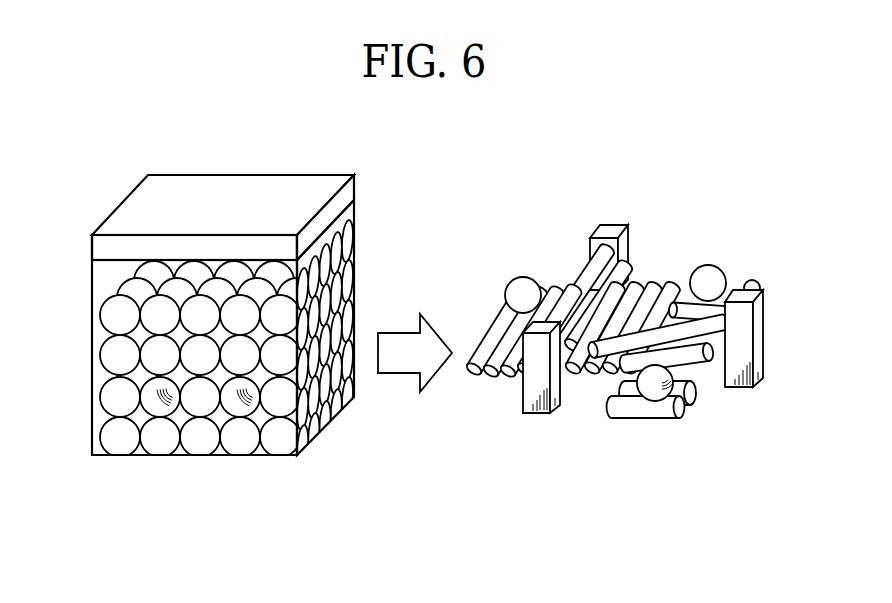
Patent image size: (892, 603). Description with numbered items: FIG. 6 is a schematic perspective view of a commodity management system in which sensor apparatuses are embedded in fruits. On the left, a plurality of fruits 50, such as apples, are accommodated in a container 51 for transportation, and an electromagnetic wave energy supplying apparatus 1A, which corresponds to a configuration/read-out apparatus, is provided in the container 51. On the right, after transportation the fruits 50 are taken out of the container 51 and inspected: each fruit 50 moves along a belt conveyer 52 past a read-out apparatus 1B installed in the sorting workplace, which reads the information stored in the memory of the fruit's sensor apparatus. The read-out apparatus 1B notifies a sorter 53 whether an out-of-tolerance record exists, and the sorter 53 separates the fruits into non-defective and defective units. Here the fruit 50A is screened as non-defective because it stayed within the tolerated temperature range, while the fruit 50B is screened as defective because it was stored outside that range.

The electromagnetic wave energy supplying apparatus 1A is at (265, 317).
The read-out apparatus 1B is at (605, 319).
The fruit 50 is at (125, 433).
The fruit 50A is at (707, 278).
The fruit 50B is at (648, 389).
The container 51 is at (360, 223).
The belt conveyer 52 is at (497, 323).
The sorter 53 is at (738, 378).